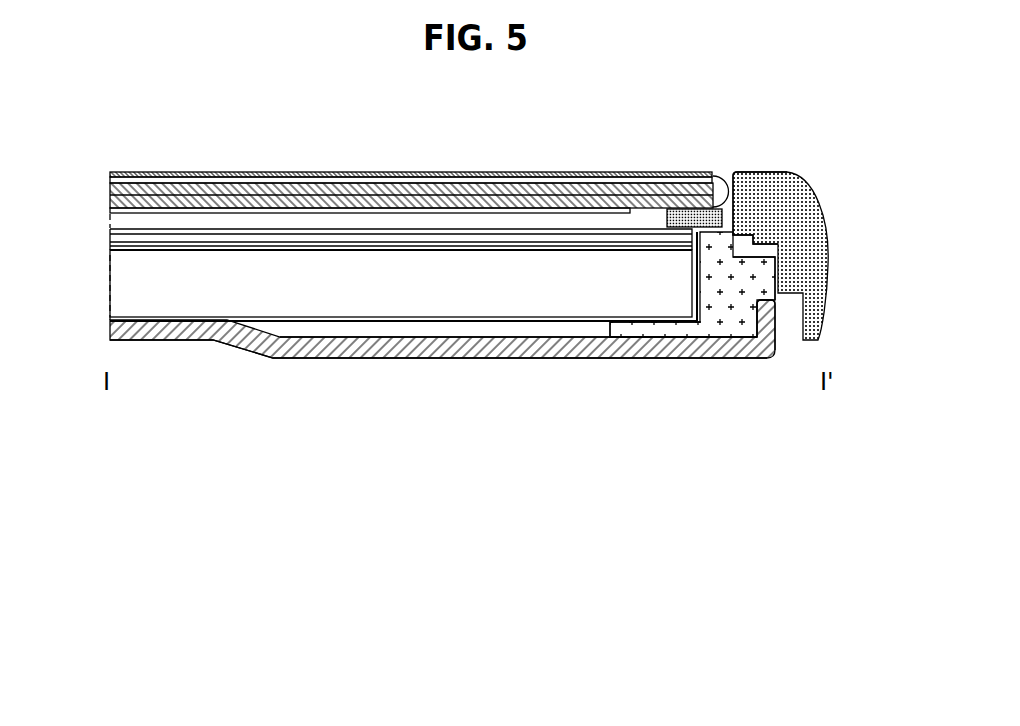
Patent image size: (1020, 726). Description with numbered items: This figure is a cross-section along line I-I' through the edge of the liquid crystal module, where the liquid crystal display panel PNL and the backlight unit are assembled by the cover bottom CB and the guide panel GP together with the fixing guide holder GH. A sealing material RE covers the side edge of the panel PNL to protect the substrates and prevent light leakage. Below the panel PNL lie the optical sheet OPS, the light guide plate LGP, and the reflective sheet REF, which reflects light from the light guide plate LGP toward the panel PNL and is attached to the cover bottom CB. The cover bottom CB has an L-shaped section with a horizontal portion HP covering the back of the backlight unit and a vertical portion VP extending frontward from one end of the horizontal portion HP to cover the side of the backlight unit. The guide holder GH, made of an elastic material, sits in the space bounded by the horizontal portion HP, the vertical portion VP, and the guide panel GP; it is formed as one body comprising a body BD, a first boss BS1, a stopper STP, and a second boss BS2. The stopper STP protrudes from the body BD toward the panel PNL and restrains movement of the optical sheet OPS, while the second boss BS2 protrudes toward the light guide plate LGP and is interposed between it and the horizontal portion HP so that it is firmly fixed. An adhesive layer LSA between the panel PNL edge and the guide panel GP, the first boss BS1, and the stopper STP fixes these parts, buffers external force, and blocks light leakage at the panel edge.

The liquid crystal display panel PNL is at (105, 173).
The sealing material RE is at (720, 177).
The adhesive layer LSA is at (687, 211).
The optical sheet OPS is at (105, 225).
The light guide plate LGP is at (137, 282).
The reflective sheet REF is at (137, 318).
The cover bottom CB is at (782, 413).
The horizontal portion HP is at (712, 341).
The vertical portion VP is at (770, 352).
The body BD is at (712, 288).
The first boss BS1 is at (762, 288).
The second boss BS2 is at (626, 330).
The guide panel GP is at (818, 258).
The stopper STP is at (710, 233).
The guide holder GH is at (540, 456).